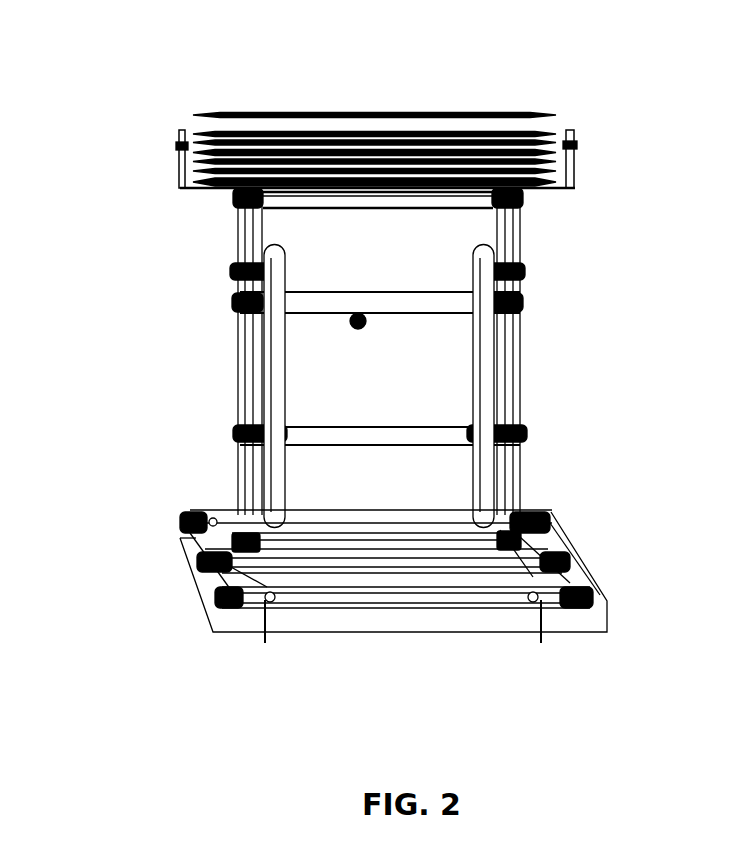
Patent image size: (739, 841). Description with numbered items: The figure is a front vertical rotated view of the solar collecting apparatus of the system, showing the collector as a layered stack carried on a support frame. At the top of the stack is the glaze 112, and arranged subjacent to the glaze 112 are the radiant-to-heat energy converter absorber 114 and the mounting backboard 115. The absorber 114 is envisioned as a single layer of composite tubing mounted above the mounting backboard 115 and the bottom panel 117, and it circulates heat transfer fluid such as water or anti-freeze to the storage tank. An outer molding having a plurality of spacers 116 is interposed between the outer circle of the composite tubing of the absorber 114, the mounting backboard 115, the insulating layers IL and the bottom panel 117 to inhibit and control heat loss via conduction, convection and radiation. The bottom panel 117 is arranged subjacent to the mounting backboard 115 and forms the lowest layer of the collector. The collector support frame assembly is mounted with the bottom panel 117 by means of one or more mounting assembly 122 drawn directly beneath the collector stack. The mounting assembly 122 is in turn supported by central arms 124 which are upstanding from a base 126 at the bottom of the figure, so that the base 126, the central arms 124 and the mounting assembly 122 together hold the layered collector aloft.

The glaze 112 is at (560, 117).
The radiant-to-heat energy converter absorber 114 is at (556, 134).
The mounting backboard 115 is at (182, 148).
The spacers 116 is at (577, 167).
The bottom panel 117 is at (561, 188).
The interlayers IL is at (247, 181).
The mounting assembly 122 is at (483, 229).
The central arm 124 is at (462, 361).
The base 126 is at (430, 622).